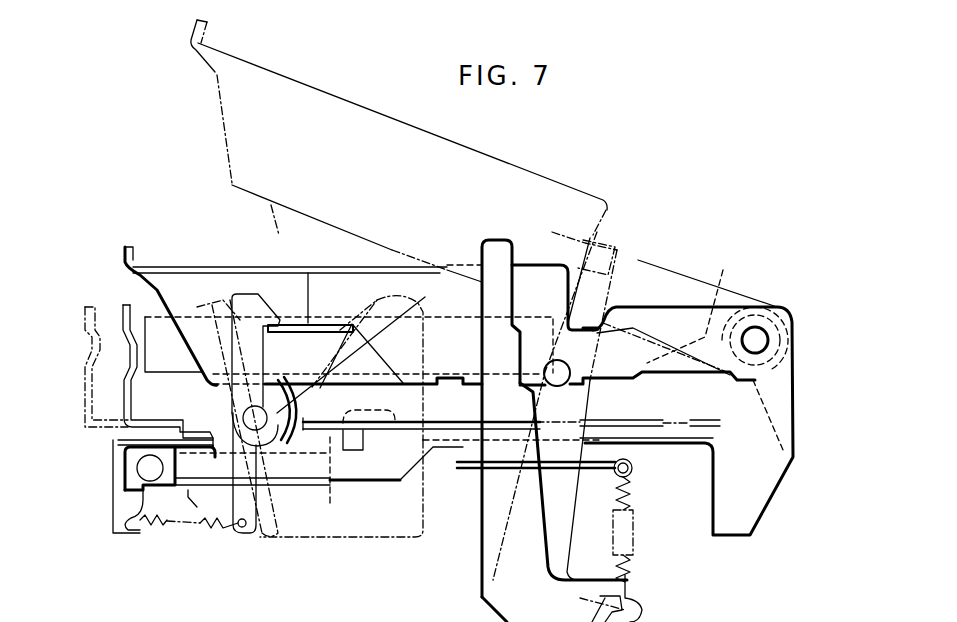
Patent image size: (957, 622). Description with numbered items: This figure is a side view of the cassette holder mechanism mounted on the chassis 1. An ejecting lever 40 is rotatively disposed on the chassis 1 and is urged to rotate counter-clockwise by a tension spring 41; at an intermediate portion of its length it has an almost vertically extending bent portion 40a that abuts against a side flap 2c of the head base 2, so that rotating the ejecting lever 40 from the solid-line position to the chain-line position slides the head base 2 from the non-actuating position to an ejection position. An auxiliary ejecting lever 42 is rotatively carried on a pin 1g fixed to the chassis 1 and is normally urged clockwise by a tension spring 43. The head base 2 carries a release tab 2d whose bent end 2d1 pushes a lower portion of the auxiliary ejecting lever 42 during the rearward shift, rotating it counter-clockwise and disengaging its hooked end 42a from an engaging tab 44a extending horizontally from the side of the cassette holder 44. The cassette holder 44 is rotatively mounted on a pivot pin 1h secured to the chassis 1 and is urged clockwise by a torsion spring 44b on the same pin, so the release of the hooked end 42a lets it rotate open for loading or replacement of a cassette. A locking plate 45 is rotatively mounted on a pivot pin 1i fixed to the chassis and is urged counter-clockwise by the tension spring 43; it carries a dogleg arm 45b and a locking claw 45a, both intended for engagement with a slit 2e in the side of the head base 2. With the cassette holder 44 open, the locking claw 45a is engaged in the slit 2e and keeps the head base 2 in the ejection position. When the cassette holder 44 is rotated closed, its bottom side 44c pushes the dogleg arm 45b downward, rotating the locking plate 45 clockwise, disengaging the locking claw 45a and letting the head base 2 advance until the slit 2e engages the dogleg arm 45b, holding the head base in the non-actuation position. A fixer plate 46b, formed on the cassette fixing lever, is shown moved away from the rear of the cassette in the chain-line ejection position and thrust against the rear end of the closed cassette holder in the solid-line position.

The chassis 1 is at (453, 277).
The pivot pin 1h is at (768, 338).
The pivot pin 1i is at (148, 468).
The pin 1g is at (250, 416).
The head base 2 is at (620, 418).
The side flap 2c is at (582, 380).
The release tab 2d is at (368, 475).
The bent end 2d1 is at (197, 507).
The slit 2e is at (343, 422).
The ejecting lever 40 is at (520, 240).
The bent portion 40a is at (533, 395).
The tension spring 41 is at (635, 540).
The auxiliary ejecting lever 42 is at (232, 350).
The hooked end 42a is at (262, 308).
The tension spring 43 is at (180, 523).
The cassette holder 44 is at (257, 267).
The engaging tab 44a is at (300, 333).
The torsion spring 44b is at (717, 290).
The bottom side 44c is at (403, 383).
The locking plate 45 is at (300, 483).
The locking claw 45a is at (335, 483).
The dogleg arm 45b is at (360, 372).
The fixer plate 46b is at (123, 322).